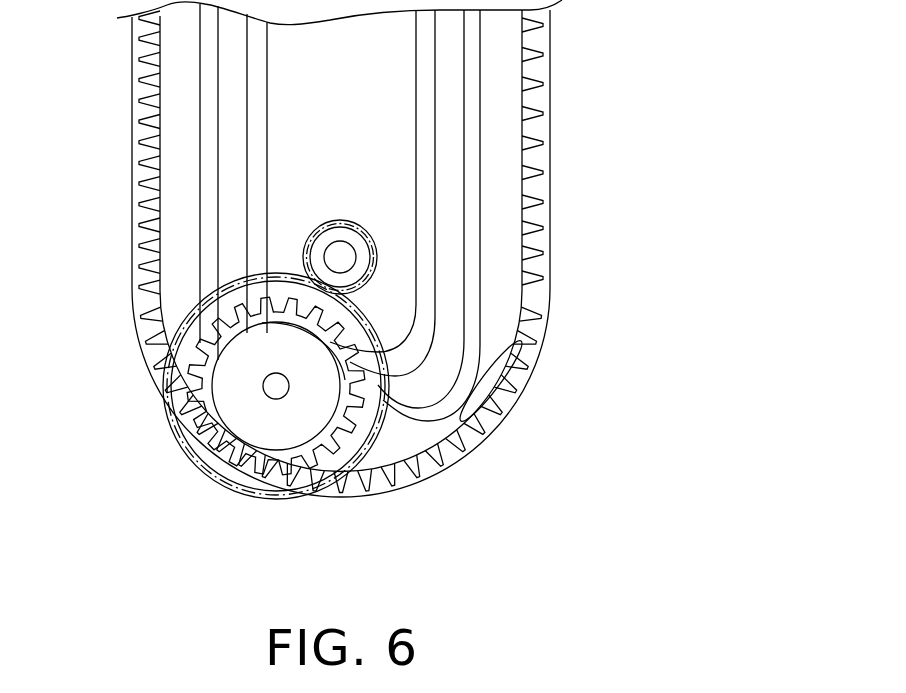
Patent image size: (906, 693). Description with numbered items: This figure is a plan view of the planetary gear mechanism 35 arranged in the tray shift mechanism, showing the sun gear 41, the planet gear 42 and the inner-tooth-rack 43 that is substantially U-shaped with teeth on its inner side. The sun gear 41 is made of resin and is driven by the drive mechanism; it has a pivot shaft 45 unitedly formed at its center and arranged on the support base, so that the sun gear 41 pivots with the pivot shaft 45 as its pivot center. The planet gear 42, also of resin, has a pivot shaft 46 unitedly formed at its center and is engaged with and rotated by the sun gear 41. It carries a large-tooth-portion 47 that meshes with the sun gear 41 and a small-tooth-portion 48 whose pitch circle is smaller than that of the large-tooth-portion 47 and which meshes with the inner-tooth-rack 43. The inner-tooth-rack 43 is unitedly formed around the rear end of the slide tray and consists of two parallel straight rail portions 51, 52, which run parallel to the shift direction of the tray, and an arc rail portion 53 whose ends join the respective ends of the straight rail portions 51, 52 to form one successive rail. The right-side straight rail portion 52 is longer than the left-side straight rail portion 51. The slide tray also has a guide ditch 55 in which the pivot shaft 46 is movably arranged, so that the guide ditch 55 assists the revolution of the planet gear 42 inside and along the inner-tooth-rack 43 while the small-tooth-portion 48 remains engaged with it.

The planetary gear mechanism 35 is at (188, 528).
The sun gear 41 is at (320, 226).
The planet gear 42 is at (282, 439).
The inner-tooth-rack 43 is at (520, 343).
The pivot shaft 45 is at (343, 258).
The pivot shaft 46 is at (200, 462).
The large-tooth-portion 47 is at (380, 472).
The small-tooth-portion 48 is at (350, 497).
The straight rail portion 51 is at (137, 166).
The straight rail portion 52 is at (522, 147).
The arc rail portion 53 is at (403, 482).
The guide ditch 55 is at (460, 284).